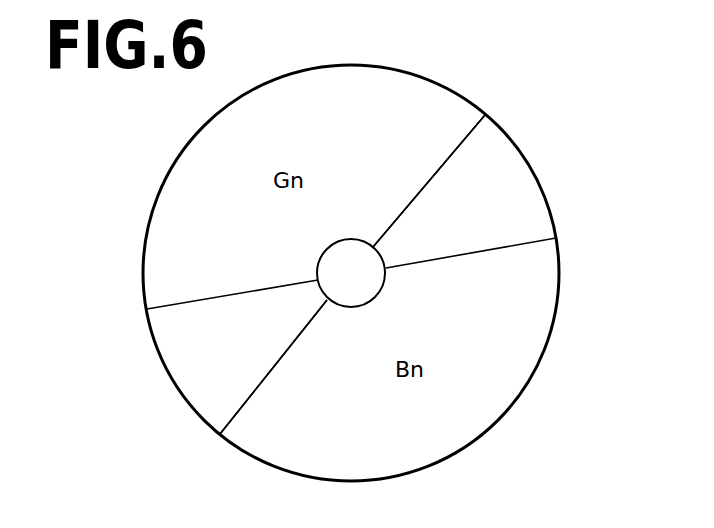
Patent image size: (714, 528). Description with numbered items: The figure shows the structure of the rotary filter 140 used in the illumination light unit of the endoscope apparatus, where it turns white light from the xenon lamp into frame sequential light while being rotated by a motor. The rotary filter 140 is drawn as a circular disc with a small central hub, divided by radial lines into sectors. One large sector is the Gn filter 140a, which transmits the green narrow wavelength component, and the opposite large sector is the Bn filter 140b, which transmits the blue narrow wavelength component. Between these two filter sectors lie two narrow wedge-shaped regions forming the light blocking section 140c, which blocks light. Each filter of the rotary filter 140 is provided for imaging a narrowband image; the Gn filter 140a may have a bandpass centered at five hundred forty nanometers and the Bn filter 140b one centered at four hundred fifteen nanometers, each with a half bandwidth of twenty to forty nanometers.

The rotary filter 140 is at (553, 42).
The Gn filter 140a is at (420, 82).
The Bn filter 140b is at (547, 260).
The light blocking section 140c is at (515, 153).